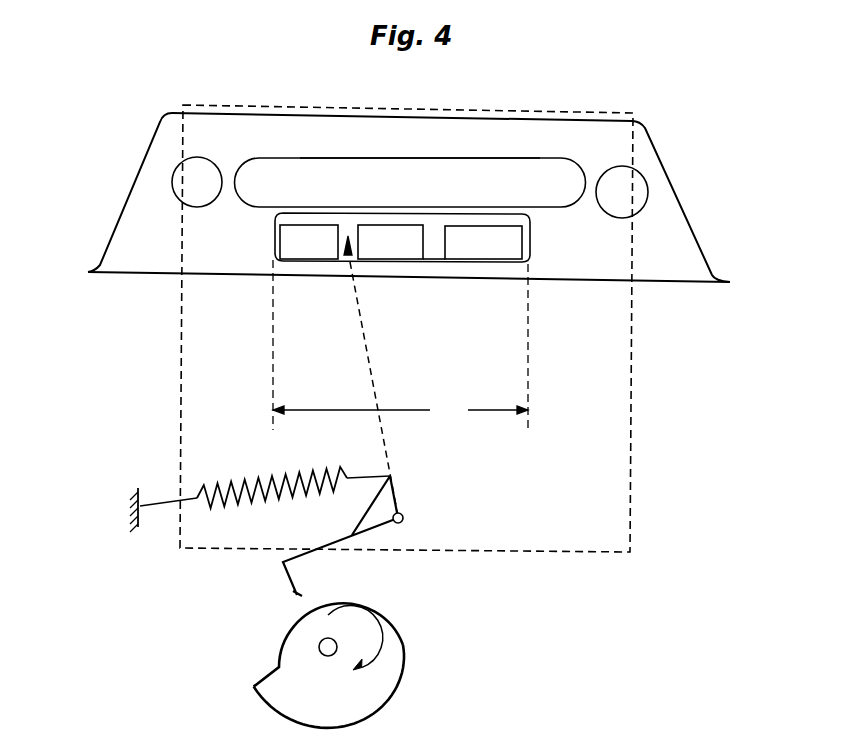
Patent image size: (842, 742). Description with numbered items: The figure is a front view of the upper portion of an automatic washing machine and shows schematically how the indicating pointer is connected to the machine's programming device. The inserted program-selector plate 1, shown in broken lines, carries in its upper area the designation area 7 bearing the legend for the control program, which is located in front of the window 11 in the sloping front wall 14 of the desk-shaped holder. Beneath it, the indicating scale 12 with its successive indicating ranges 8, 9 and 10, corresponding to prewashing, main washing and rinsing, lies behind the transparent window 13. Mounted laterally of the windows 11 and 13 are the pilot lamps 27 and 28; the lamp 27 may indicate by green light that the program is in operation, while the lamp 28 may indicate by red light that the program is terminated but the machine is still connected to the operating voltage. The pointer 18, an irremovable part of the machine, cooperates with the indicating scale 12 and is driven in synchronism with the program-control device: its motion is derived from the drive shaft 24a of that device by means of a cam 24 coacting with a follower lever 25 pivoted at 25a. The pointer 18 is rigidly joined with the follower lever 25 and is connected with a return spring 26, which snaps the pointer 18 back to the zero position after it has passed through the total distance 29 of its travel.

The program-selector plate 1 is at (633, 420).
The designation area 7 is at (320, 162).
The indicating range 8 is at (315, 258).
The indicating range 9 is at (405, 258).
The indicating range 10 is at (508, 259).
The window 11 is at (412, 162).
The indicating scale 12 is at (438, 250).
The transparent window 13 is at (275, 221).
The sloping front wall 14 is at (498, 135).
The pointer 18 is at (372, 363).
The cam 24 is at (388, 650).
The drive shaft 24a is at (326, 656).
The follower lever 25 is at (288, 572).
The pivot 25a is at (403, 520).
The return spring 26 is at (245, 486).
The pilot lamp 27 is at (180, 180).
The pilot lamp 28 is at (637, 190).
The total distance of travel 29 is at (400, 345).